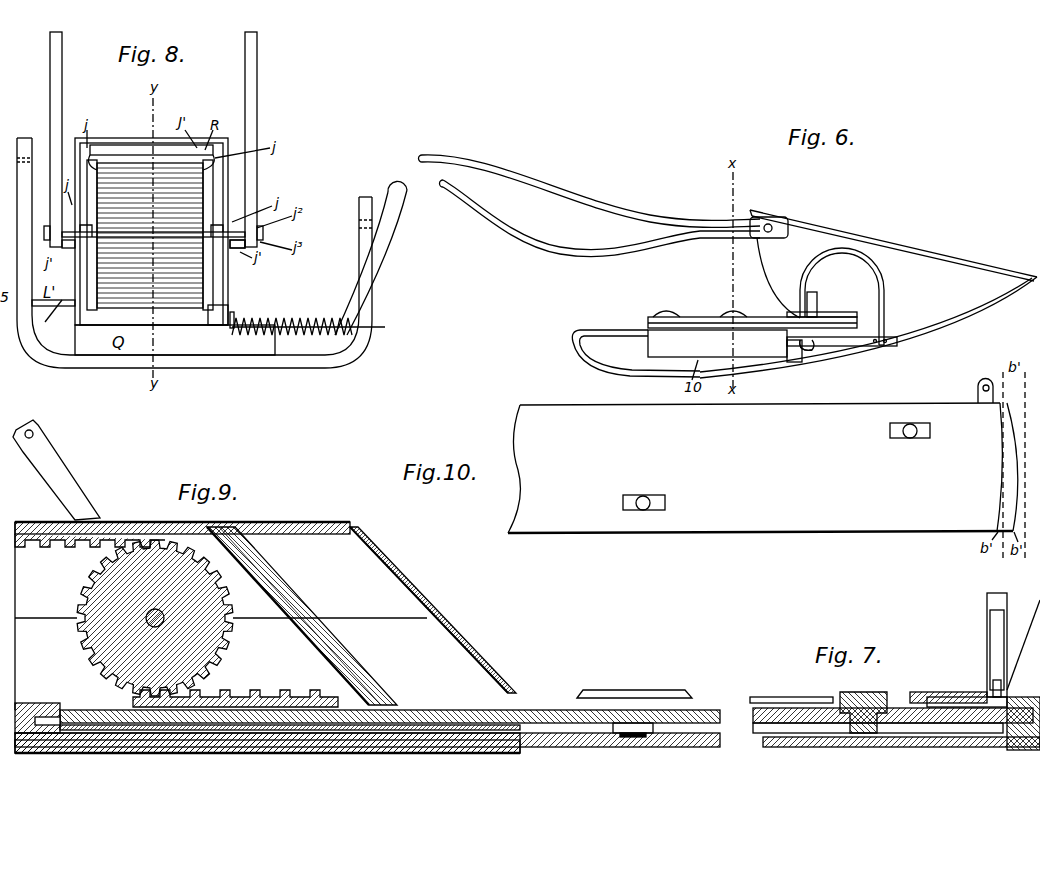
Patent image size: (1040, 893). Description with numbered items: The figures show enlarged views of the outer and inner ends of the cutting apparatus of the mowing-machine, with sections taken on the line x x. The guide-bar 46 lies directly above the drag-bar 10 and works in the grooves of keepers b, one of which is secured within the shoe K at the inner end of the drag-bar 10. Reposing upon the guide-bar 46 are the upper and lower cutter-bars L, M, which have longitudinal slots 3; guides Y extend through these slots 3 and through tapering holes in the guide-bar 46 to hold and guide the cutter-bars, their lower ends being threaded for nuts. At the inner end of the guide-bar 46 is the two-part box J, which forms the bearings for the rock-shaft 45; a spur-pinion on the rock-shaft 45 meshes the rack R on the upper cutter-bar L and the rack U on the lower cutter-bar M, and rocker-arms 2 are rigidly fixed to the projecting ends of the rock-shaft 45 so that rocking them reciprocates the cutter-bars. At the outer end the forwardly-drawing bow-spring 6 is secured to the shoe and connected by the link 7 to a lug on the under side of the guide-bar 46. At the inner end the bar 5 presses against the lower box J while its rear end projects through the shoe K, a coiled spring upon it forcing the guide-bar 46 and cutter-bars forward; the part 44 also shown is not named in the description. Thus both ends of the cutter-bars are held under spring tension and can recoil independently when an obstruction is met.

In FIG. 8, the rocker-arms 2 is at (62, 92).
In FIG. 9, the rocker-arms 2 is at (70, 489).
In FIG. 7, the longitudinal slots 3 is at (785, 700).
In FIG. 8, the bar 5 is at (326, 318).
In FIG. 6, the bow-spring 6 is at (870, 260).
In FIG. 7, the bow-spring 6 is at (990, 690).
In FIG. 6, the link 7 is at (855, 346).
In FIG. 9, the drag-bar 10 is at (330, 735).
In FIG. 7, the drag-bar 10 is at (880, 725).
In FIG. 8, the handle arm 44 is at (395, 185).
In FIG. 6, the handle arm 44 is at (580, 345).
In FIG. 8, the rock-shaft 45 is at (262, 235).
In FIG. 9, the rock-shaft 45 is at (145, 612).
In FIG. 6, the guide-bar 46 is at (800, 350).
In FIG. 10, the guide-bar 46 is at (665, 503).
In FIG. 9, the guide-bar 46 is at (115, 720).
In FIG. 7, the guide-bar 46 is at (912, 727).
In FIG. 8, the upper cutter-bar L is at (125, 145).
In FIG. 6, the upper cutter-bar L is at (703, 316).
In FIG. 9, the upper cutter-bar L is at (140, 530).
In FIG. 7, the upper cutter-bar L is at (950, 700).
In FIG. 8, the lower cutter-bar M is at (60, 306).
In FIG. 9, the lower cutter-bar M is at (222, 710).
In FIG. 7, the lower cutter-bar M is at (790, 715).
In FIG. 8, the shoe K is at (240, 355).
In FIG. 9, the shoe K is at (150, 740).
In FIG. 8, the box J is at (225, 300).
In FIG. 9, the box J is at (380, 530).
In FIG. 9, the rack R is at (247, 527).
In FIG. 8, the rack U is at (228, 300).
In FIG. 9, the rack U is at (268, 707).
In FIG. 9, the guides Y is at (626, 700).
In FIG. 7, the guides Y is at (860, 700).
In FIG. 9, the gear wheel a is at (82, 628).
In FIG. 8, the keeper b is at (175, 340).
In FIG. 6, the keeper b is at (725, 346).
In FIG. 9, the keeper b is at (40, 735).
In FIG. 7, the keeper b is at (1020, 750).
In FIG. 6, the section line x is at (843, 232).
In FIG. 7, the section line x is at (987, 640).